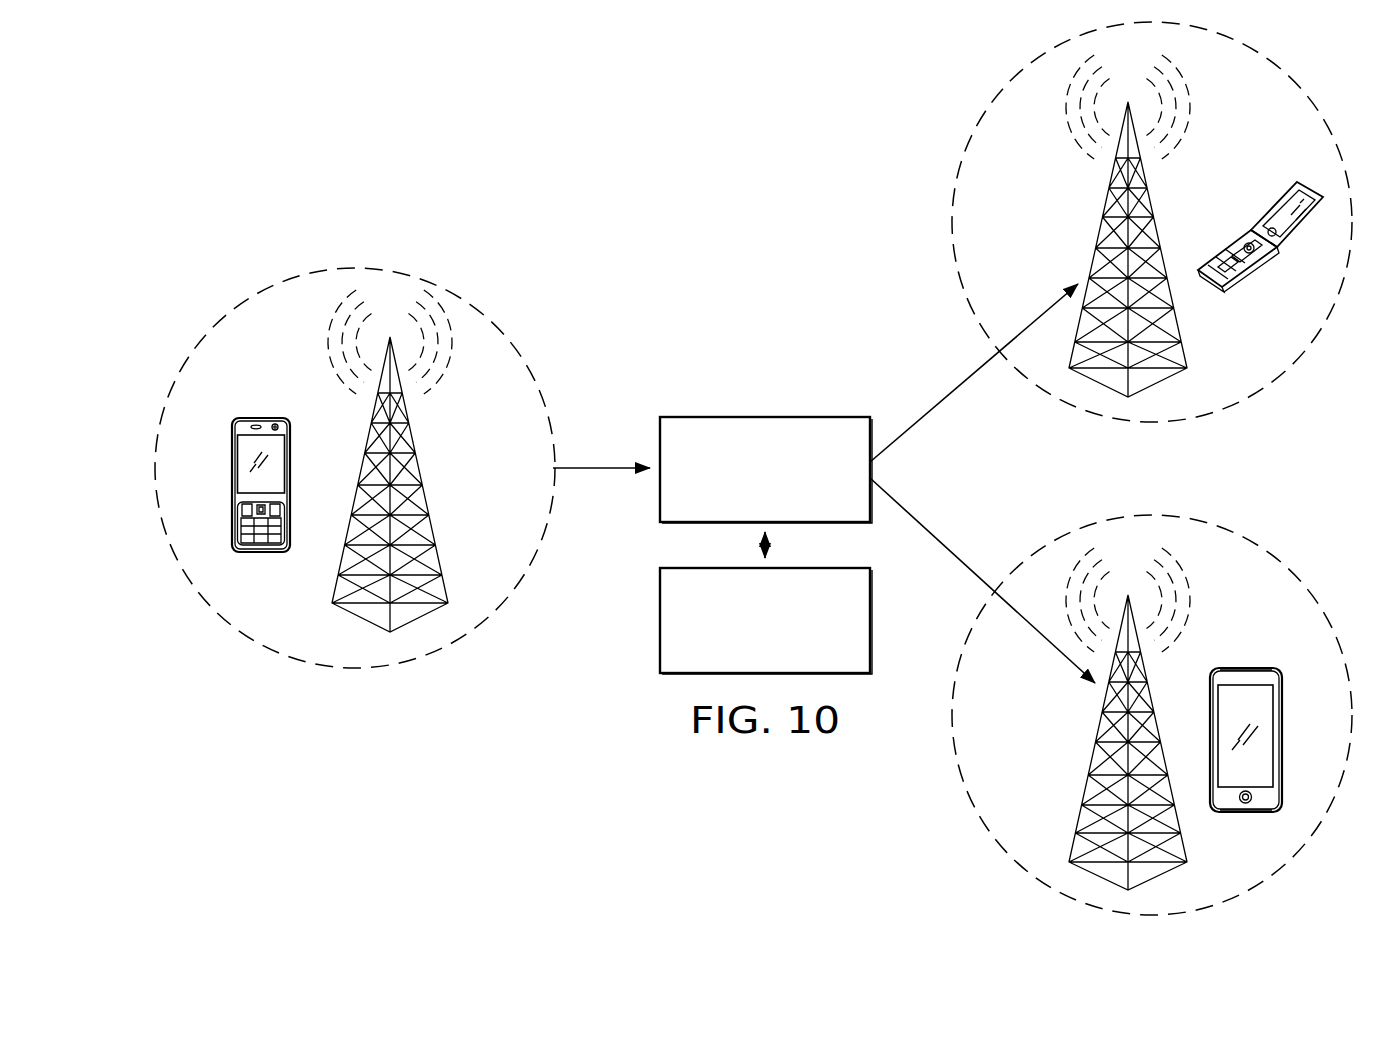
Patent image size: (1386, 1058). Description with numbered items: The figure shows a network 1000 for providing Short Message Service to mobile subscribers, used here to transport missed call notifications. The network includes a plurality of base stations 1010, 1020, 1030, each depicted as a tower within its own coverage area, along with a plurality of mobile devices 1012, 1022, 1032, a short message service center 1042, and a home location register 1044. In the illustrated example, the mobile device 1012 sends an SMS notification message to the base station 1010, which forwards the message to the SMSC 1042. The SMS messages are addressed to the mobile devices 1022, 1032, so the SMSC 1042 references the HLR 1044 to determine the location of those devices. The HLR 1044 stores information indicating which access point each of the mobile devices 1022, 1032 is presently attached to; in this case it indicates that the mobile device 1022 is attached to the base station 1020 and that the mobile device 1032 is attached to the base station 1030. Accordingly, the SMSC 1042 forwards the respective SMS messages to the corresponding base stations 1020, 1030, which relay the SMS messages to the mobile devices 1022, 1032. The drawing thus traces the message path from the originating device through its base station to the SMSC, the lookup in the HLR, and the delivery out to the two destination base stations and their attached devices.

The network 1000 is at (409, 146).
The base station 1010 is at (420, 460).
The mobile device 1012 is at (262, 420).
The base station 1020 is at (1100, 225).
The mobile device 1022 is at (1273, 203).
The base station 1030 is at (1100, 718).
The mobile device 1032 is at (1245, 668).
The short message service center 1042 is at (754, 416).
The home location register 1044 is at (659, 622).